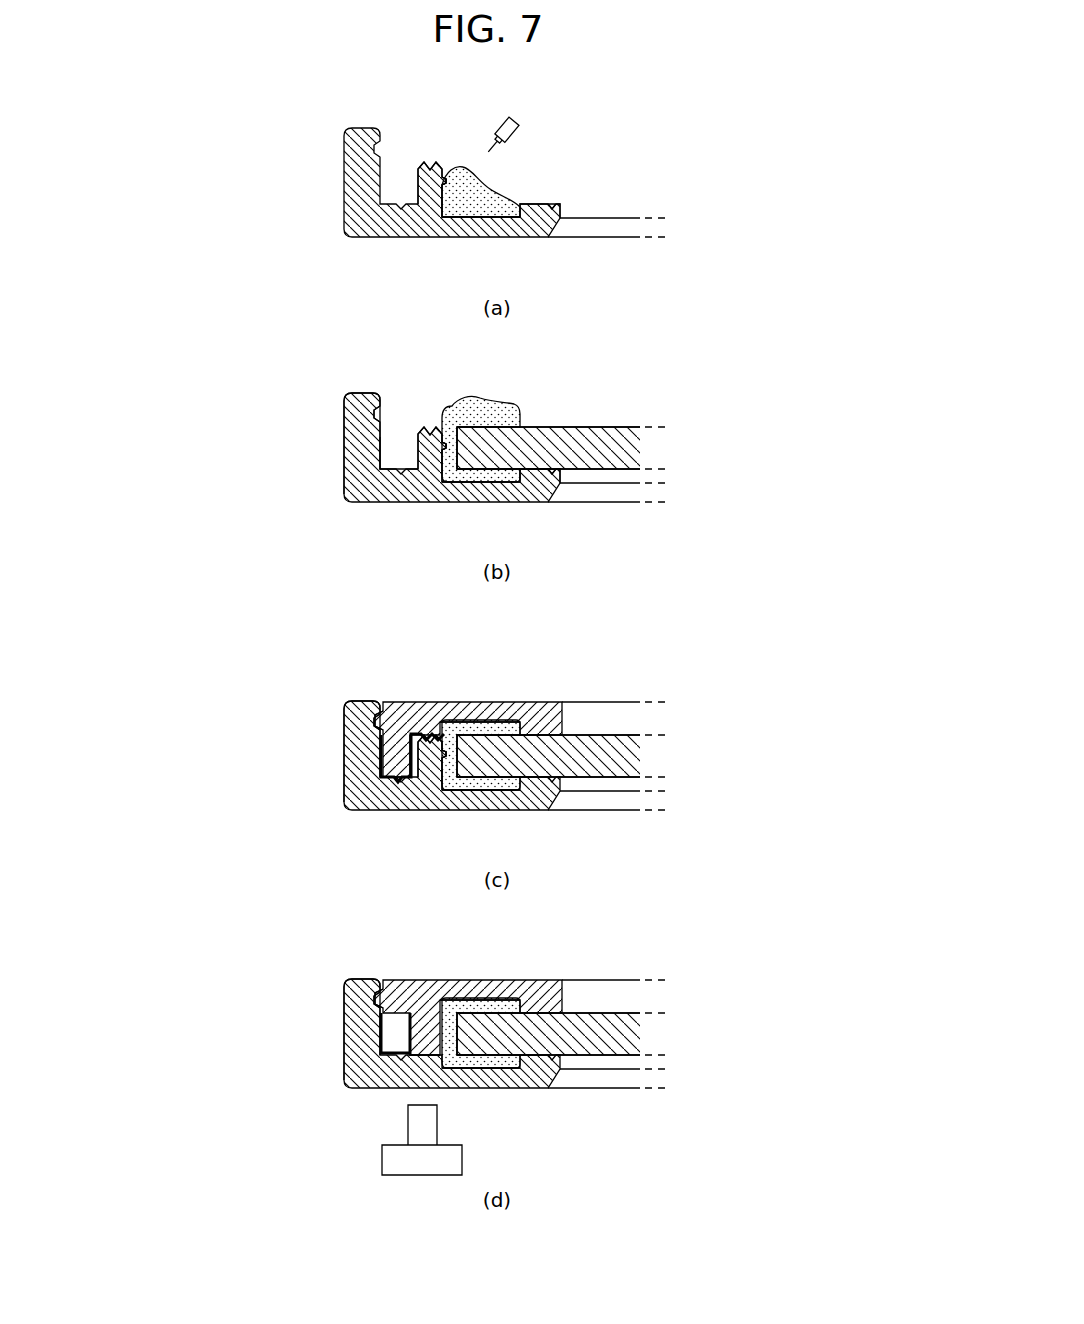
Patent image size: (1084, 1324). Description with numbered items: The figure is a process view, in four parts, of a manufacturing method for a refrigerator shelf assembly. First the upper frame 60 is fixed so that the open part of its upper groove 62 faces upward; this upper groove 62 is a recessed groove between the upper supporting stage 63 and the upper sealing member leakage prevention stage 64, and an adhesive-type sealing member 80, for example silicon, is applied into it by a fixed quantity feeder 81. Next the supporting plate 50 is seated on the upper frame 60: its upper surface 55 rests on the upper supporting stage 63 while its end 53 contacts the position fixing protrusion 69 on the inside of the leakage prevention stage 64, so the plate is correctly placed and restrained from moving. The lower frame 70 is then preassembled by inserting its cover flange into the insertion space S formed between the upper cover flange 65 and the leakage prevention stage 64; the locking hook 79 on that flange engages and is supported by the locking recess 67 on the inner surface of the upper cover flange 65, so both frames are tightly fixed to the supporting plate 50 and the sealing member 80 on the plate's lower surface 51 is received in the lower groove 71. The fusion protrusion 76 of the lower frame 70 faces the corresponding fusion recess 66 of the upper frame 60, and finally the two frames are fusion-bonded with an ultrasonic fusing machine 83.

The supporting plate 50 is at (575, 464).
The lower surface of the supporting plate 51 is at (608, 427).
The end of the supporting plate 53 is at (447, 415).
The upper surface of the supporting plate 55 is at (633, 468).
The upper frame 60 is at (522, 228).
The upper groove 62 is at (488, 216).
The upper supporting stage 63 is at (537, 202).
The upper sealing member leakage prevention stage 64 is at (426, 180).
The upper cover flange 65 is at (368, 436).
The fusion recess 66 is at (382, 772).
The locking recess 67 is at (378, 406).
The position fixing protrusion 69 is at (453, 178).
The lower frame 70 is at (517, 712).
The lower groove 71 is at (492, 719).
The fusion protrusion 76 is at (437, 727).
The locking hook 79 is at (378, 735).
The sealing member 80 is at (493, 190).
The fixed quantity feeder 81 is at (521, 131).
The ultrasonic fusing machine 83 is at (455, 1160).
The insertion space S is at (400, 448).